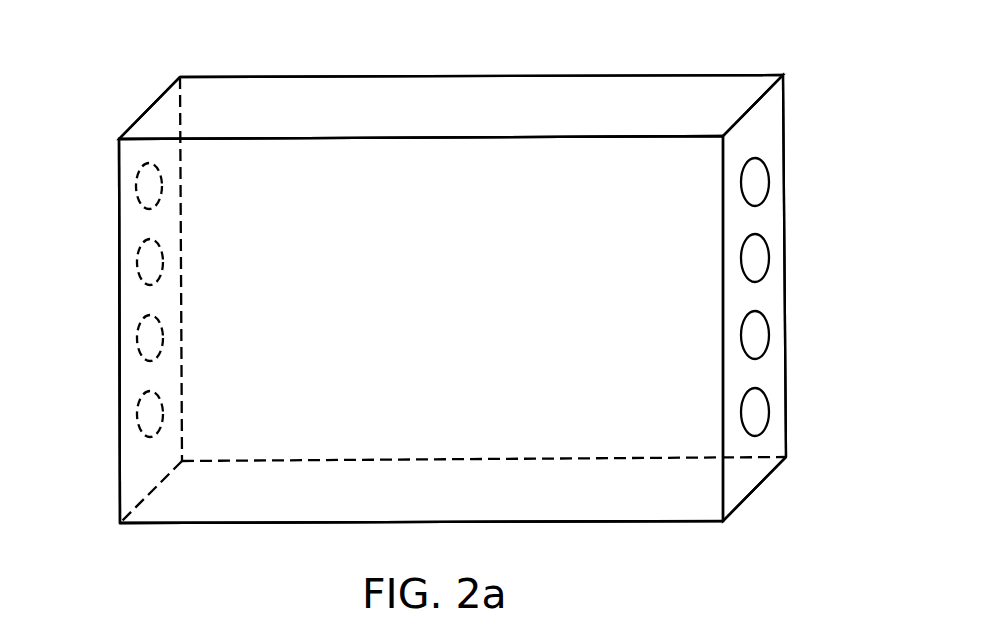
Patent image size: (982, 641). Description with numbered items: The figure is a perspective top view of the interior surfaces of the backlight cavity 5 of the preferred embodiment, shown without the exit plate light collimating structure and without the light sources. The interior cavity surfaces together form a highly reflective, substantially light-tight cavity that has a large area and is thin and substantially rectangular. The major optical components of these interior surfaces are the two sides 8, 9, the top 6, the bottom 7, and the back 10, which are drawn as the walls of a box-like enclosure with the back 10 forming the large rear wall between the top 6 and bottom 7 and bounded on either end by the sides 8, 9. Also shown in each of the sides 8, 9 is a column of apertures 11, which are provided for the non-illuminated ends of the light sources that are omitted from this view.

The backlight cavity 5 is at (258, 48).
The top 6 is at (528, 95).
The bottom 7 is at (622, 522).
The side 8 is at (763, 133).
The side 9 is at (117, 160).
The back 10 is at (405, 402).
The apertures 11 is at (143, 320).